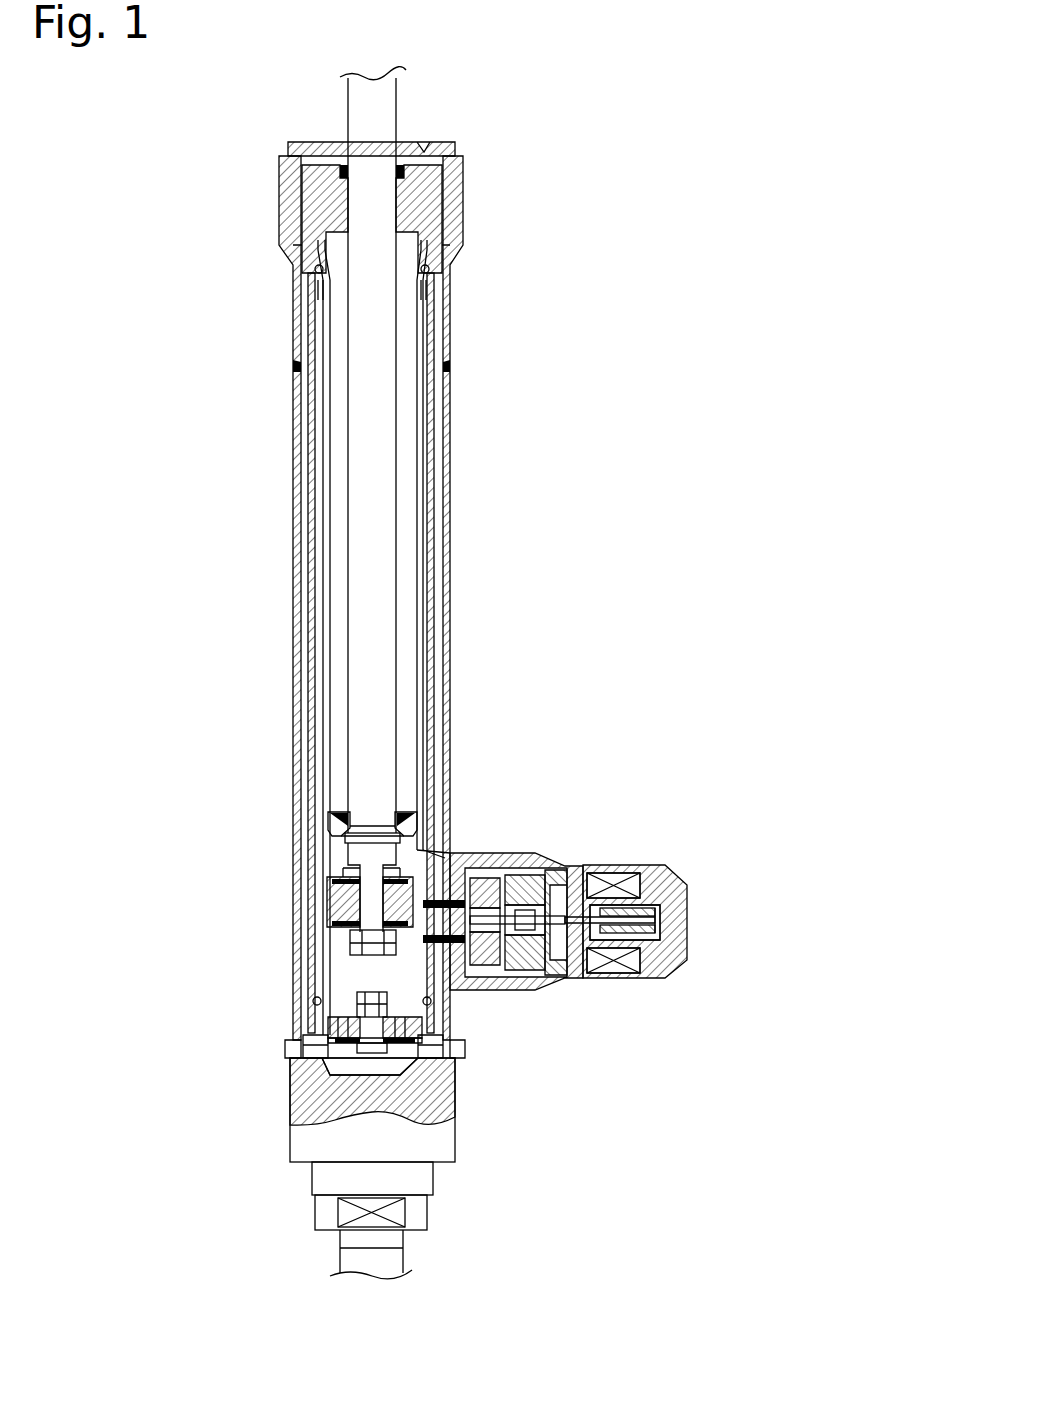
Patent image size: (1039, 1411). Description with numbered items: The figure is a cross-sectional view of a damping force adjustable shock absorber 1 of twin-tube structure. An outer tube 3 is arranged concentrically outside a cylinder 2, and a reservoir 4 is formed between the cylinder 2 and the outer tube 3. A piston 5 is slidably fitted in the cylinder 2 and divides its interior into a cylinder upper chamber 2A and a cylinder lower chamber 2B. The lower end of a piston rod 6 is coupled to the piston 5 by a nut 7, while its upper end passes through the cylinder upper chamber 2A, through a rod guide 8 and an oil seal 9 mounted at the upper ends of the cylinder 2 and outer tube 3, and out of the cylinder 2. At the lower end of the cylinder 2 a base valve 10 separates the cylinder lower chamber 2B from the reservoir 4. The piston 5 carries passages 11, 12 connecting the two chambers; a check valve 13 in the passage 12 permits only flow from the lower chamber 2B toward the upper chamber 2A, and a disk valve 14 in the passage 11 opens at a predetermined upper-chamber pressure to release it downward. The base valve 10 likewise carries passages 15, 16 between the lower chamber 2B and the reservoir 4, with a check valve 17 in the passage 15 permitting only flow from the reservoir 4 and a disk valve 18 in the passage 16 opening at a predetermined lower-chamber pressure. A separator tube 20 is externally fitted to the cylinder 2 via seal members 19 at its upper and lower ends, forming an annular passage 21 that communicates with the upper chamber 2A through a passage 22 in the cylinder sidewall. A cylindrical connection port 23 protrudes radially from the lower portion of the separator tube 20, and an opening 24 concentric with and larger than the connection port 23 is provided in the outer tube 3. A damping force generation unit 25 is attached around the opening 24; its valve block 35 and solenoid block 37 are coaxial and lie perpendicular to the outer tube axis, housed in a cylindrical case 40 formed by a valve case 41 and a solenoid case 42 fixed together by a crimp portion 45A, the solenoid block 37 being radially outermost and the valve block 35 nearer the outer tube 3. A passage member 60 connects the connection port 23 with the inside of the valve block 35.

The damping force adjustable shock absorber 1 is at (584, 212).
The cylinder 2 is at (434, 456).
The cylinder upper chamber 2A is at (408, 545).
The cylinder lower chamber 2B is at (368, 972).
The outer tube 3 is at (451, 405).
The reservoir 4 is at (303, 478).
The piston 5 is at (330, 893).
The piston rod 6 is at (390, 102).
The nut 7 is at (362, 942).
The rod guide 8 is at (314, 255).
The oil seal 9 is at (437, 163).
The base valve 10 is at (445, 1050).
The passage 11 is at (322, 877).
The passage 12 is at (438, 770).
The check valve 13 is at (448, 745).
The disk valve 14 is at (326, 915).
The passage 15 is at (302, 1043).
The passage 16 is at (447, 1090).
The check valve 17 is at (322, 1013).
The disk valve 18 is at (440, 1110).
The seal member 19 is at (429, 272).
The separator tube 20 is at (303, 570).
The annular passage 21 is at (421, 625).
The passage 22 is at (435, 317).
The connection port 23 is at (458, 855).
The opening 24 is at (462, 996).
The damping force generation unit 25 is at (692, 912).
The valve block 35 is at (540, 992).
The solenoid block 37 is at (625, 862).
The case 40 is at (655, 985).
The valve case 41 is at (505, 862).
The solenoid case 42 is at (617, 980).
The crimp portion 45A is at (575, 856).
The passage member 60 is at (508, 856).